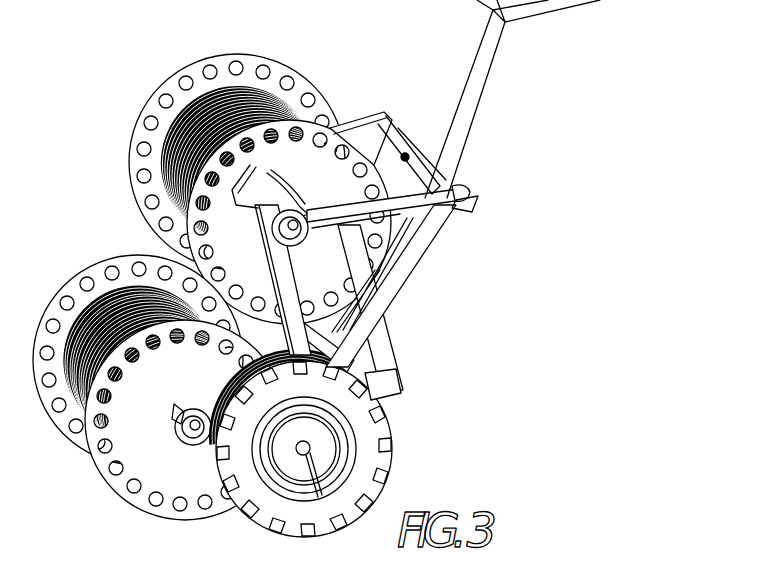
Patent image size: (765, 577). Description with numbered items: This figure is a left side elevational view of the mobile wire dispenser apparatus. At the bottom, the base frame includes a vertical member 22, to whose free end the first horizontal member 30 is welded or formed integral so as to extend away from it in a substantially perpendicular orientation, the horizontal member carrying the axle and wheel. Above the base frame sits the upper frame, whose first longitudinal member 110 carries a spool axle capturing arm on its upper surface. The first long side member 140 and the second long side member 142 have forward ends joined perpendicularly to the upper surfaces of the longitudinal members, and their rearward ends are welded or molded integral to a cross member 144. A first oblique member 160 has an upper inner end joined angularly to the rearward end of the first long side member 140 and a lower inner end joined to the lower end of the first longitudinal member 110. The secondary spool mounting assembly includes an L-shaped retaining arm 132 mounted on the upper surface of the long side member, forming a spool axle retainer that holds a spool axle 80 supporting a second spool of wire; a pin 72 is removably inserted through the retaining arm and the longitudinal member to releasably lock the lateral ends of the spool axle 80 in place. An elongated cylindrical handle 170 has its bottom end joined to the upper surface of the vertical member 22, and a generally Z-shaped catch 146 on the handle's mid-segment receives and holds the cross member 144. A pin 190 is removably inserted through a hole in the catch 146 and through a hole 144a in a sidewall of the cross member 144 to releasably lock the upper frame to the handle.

The vertical member 22 is at (378, 360).
The first horizontal member 30 is at (387, 393).
The pin 72 is at (472, 204).
The spool axle 80 is at (272, 229).
The first longitudinal member 110 is at (283, 288).
The retaining arm 132 is at (320, 140).
The first long side member 140 is at (405, 217).
The second long side member 142 is at (352, 123).
The cross member 144 is at (450, 168).
The hole 144a is at (433, 148).
The Z-shaped catch 146 is at (460, 188).
The first oblique member 160 is at (410, 262).
The elongated cylindrical handle 170 is at (478, 100).
The pin 190 is at (402, 135).